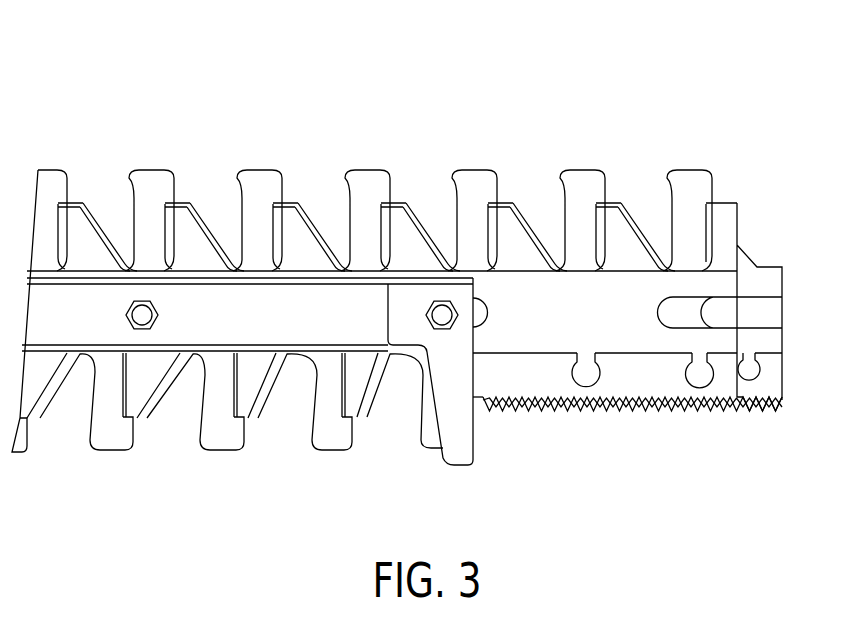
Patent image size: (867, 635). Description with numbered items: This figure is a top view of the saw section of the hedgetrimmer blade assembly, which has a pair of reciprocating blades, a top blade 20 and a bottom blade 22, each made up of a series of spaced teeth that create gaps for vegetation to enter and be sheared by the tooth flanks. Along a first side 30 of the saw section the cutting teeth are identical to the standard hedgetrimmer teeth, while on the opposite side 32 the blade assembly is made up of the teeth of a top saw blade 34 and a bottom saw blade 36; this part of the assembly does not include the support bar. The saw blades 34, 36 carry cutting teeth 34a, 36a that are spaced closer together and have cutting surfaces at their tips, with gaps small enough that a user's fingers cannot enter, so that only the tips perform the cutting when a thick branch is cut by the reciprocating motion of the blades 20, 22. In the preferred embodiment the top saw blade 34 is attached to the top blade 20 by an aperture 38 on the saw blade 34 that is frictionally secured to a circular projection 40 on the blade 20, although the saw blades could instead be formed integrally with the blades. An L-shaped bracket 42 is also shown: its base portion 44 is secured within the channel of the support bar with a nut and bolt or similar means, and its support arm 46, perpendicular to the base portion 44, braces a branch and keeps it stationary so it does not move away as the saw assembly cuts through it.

The first side 30 is at (572, 113).
The top blade 20 is at (546, 319).
The bottom blade 22 is at (268, 182).
The L-shaped bracket 42 is at (430, 414).
The base portion 44 is at (407, 302).
The support arm 46 is at (453, 447).
The opposite side 32 is at (627, 457).
The top saw blade 34 is at (658, 382).
The cutting teeth 34a is at (496, 418).
The bottom saw blade 36 is at (773, 374).
The cutting teeth 36a is at (763, 412).
The aperture 38 is at (572, 375).
The projection 40 is at (586, 368).